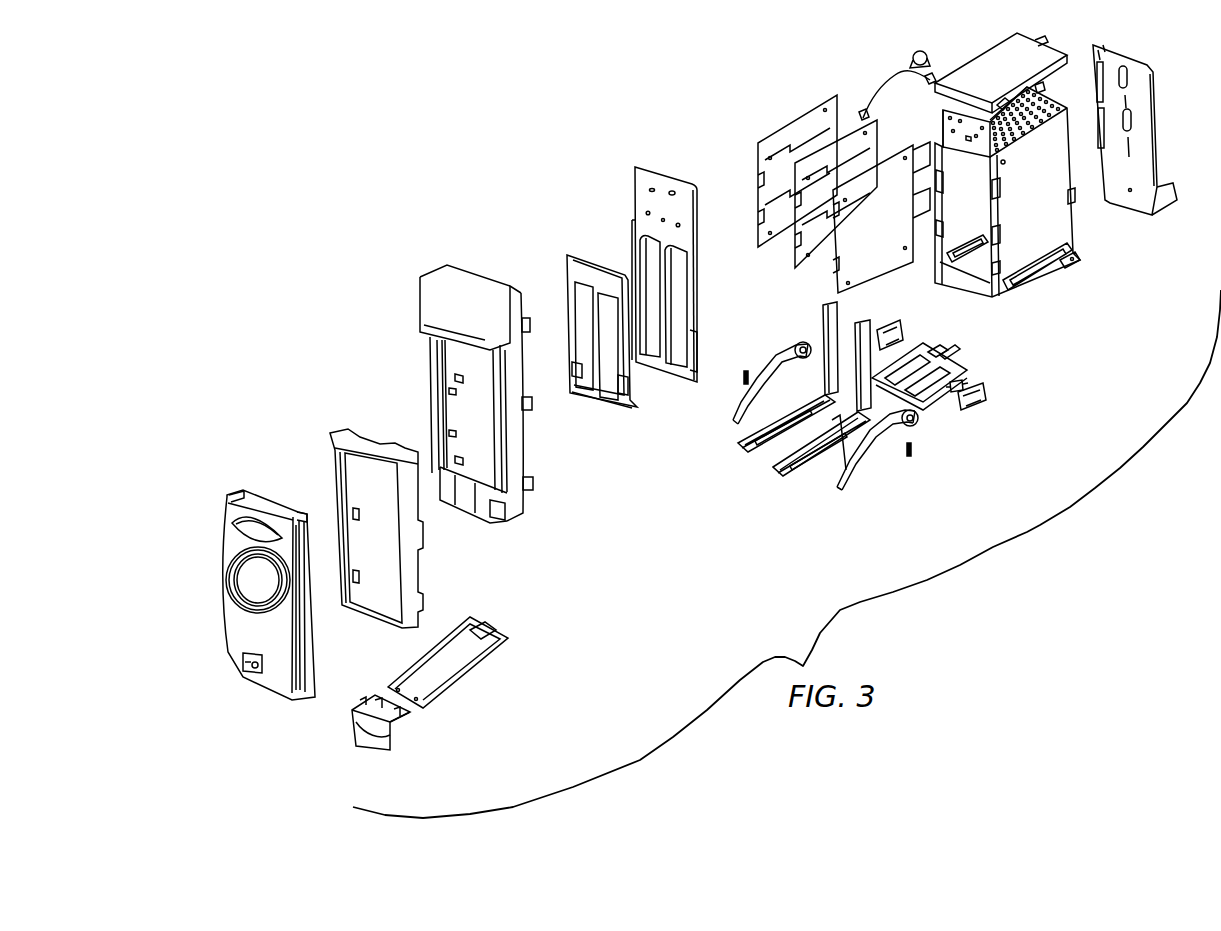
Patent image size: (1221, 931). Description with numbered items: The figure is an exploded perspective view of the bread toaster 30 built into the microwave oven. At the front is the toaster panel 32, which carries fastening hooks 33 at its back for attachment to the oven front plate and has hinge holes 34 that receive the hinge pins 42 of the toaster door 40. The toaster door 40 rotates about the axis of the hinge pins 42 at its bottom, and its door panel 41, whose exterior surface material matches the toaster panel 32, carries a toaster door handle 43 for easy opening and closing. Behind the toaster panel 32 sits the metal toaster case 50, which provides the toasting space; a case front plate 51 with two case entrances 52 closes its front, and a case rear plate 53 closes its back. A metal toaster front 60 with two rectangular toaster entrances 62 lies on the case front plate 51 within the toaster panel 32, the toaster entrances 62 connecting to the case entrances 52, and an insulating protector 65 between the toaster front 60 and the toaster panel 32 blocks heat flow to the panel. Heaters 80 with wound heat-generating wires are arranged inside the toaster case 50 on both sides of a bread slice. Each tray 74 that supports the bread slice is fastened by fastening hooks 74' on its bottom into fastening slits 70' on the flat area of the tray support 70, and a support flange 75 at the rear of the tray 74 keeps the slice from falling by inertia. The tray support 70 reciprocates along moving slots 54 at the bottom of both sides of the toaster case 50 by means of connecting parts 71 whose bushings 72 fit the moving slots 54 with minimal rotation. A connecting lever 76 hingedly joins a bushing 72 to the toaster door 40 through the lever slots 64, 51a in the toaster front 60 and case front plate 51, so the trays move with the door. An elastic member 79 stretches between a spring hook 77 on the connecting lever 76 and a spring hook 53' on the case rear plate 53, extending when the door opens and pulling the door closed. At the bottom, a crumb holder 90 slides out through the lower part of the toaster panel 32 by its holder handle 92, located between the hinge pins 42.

The toaster 30 is at (520, 220).
The toaster panel 32 is at (456, 273).
The fastening hooks 33 is at (532, 406).
The hinge holes 34 is at (504, 517).
The toaster door 40 is at (232, 480).
The door panel 41 is at (292, 514).
The hinge pins 42 is at (255, 674).
The toaster door handle 43 is at (232, 570).
The toaster case 50 is at (1042, 217).
The case front plate 51 is at (640, 214).
The lever slot 51a is at (698, 350).
The case entrances 52 is at (675, 282).
The case rear plate 53 is at (1156, 130).
The spring hook 53' is at (1179, 225).
The moving slots 54 is at (1073, 254).
The toaster front 60 is at (571, 258).
The toaster entrances 62 is at (607, 308).
The lever slot 64 is at (613, 406).
The protector 65 is at (352, 432).
The tray support 70 is at (954, 376).
The fastening slits 70' is at (969, 338).
The connecting parts 71 is at (966, 385).
The bushing 72 is at (881, 330).
The tray 74 is at (786, 462).
The fastening hooks 74' is at (821, 458).
The support flange 75 is at (827, 330).
The connecting lever 76 is at (845, 478).
The spring hook 77 is at (803, 342).
The elastic member 79 is at (745, 386).
The heaters 80 is at (789, 130).
The crumb holder 90 is at (456, 677).
The holder handle 92 is at (376, 741).